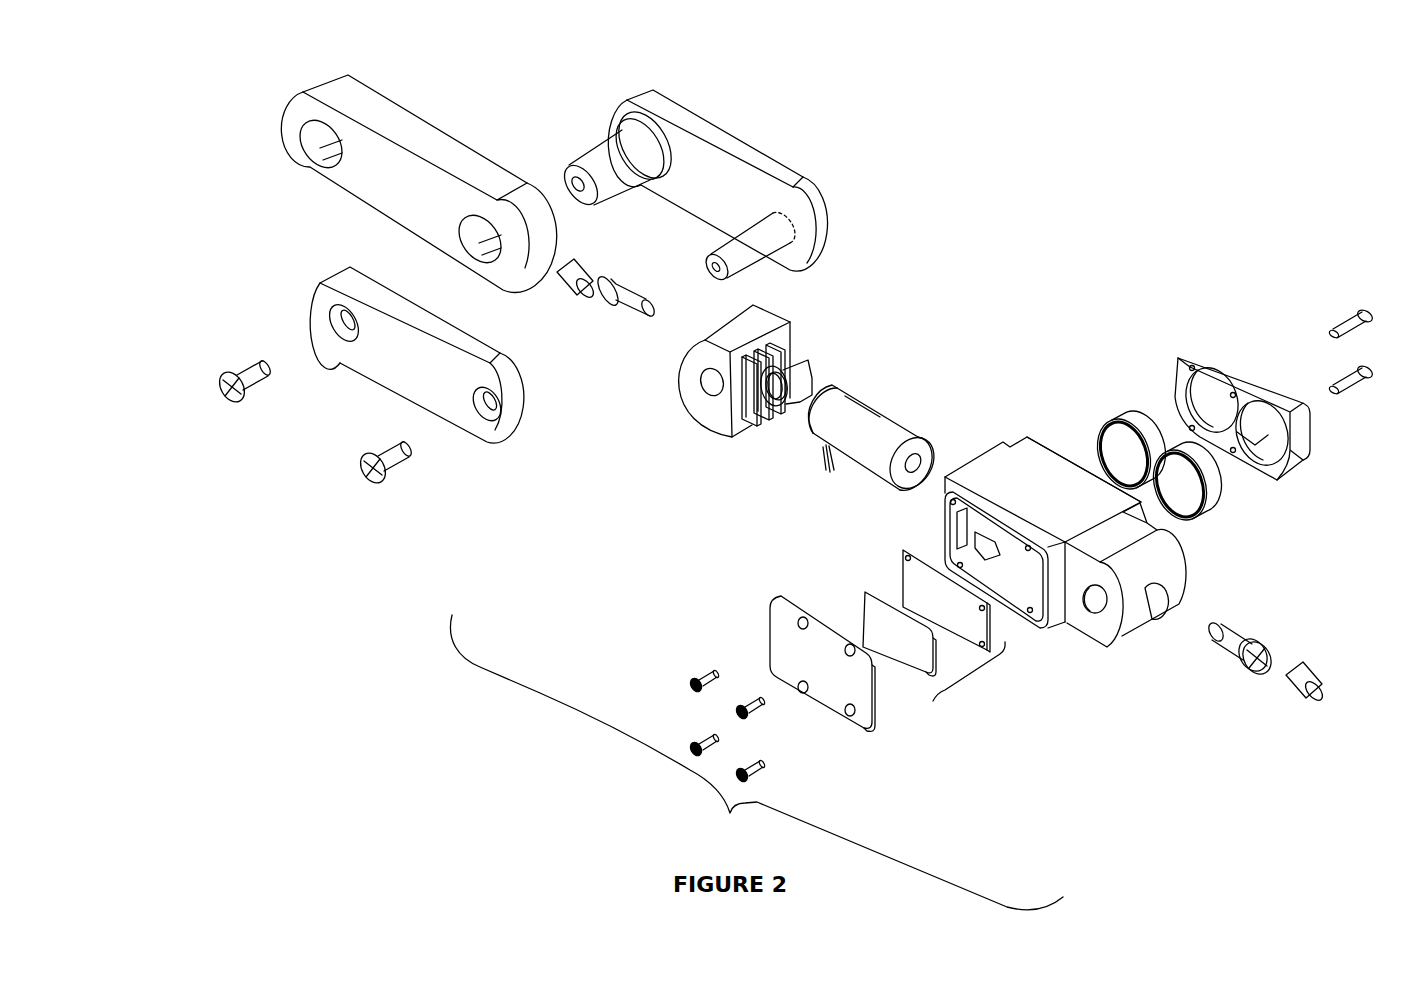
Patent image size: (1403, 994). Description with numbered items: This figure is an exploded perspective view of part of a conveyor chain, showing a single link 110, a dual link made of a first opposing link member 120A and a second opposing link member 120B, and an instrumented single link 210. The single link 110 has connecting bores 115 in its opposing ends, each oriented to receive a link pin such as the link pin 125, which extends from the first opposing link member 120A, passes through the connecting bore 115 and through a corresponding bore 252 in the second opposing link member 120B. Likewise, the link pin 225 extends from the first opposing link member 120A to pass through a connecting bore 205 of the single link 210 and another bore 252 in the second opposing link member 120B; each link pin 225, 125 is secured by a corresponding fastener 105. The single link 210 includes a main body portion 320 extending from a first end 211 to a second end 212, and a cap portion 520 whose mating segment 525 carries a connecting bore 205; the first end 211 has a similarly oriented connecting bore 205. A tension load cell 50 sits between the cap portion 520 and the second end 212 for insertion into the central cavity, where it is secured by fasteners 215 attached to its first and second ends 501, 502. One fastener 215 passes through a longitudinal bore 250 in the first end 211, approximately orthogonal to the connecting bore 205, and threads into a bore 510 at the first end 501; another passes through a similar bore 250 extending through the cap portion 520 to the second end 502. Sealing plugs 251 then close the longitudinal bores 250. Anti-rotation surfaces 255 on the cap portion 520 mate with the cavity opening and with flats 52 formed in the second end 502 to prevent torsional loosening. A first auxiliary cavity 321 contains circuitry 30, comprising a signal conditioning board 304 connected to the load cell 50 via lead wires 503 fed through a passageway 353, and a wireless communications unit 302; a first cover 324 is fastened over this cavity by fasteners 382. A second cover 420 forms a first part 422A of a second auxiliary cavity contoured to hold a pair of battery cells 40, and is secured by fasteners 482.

The single link 110 is at (460, 165).
The connecting bores 115 is at (473, 241).
The first opposing link member 120A is at (717, 180).
The second opposing link member 120B is at (417, 355).
The link pin 125 is at (598, 170).
The link pin 225 is at (768, 240).
The fastener 105 is at (234, 408).
The bore 252 is at (347, 328).
The sealing plug 251 is at (587, 265).
The fastener 215 is at (606, 306).
The cap portion 520 is at (692, 417).
The mating segment 525 is at (780, 308).
The anti-rotation surfaces 255 is at (773, 415).
The flats 52 is at (796, 422).
The connecting bore 205 is at (710, 383).
The tension load cell 50 is at (872, 423).
The second end 502 is at (852, 380).
The first end 501 is at (933, 432).
The bore 510 is at (916, 472).
The load cell lead wires 503 is at (817, 470).
The second end 212 is at (1003, 422).
The first end 211 is at (1138, 646).
The main body portion 320 is at (1058, 464).
The longitudinal bore 250 is at (1165, 598).
The first auxiliary cavity 321 is at (975, 538).
The passageway 353 is at (985, 556).
The battery cells 40 is at (1159, 466).
The second cover 420 is at (1212, 357).
The first part of second auxiliary cavity 422A is at (1252, 447).
The fasteners 482 is at (1322, 330).
The first cover 324 is at (820, 677).
The wireless communications unit 302 is at (899, 634).
The signal conditioning board 304 is at (946, 601).
The circuitry 30 is at (969, 671).
The fasteners 382 is at (676, 700).
The single link 210 is at (756, 762).